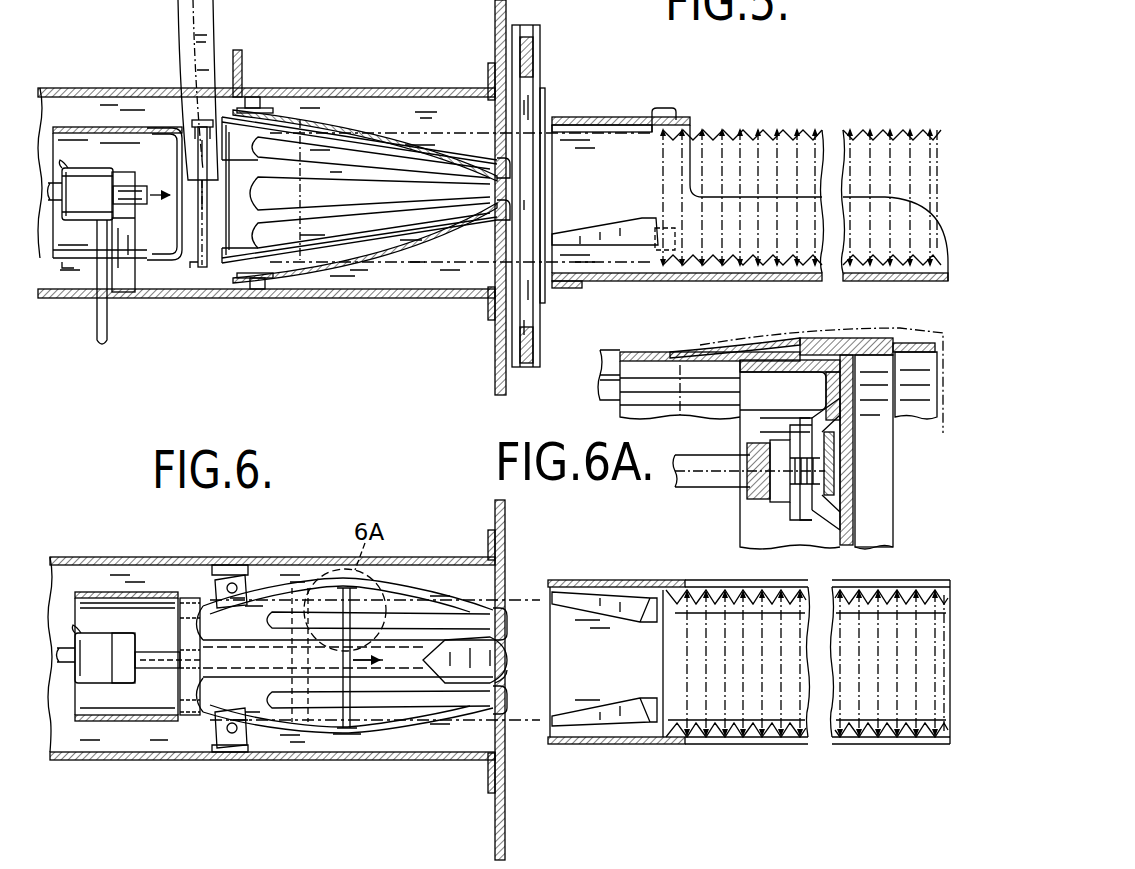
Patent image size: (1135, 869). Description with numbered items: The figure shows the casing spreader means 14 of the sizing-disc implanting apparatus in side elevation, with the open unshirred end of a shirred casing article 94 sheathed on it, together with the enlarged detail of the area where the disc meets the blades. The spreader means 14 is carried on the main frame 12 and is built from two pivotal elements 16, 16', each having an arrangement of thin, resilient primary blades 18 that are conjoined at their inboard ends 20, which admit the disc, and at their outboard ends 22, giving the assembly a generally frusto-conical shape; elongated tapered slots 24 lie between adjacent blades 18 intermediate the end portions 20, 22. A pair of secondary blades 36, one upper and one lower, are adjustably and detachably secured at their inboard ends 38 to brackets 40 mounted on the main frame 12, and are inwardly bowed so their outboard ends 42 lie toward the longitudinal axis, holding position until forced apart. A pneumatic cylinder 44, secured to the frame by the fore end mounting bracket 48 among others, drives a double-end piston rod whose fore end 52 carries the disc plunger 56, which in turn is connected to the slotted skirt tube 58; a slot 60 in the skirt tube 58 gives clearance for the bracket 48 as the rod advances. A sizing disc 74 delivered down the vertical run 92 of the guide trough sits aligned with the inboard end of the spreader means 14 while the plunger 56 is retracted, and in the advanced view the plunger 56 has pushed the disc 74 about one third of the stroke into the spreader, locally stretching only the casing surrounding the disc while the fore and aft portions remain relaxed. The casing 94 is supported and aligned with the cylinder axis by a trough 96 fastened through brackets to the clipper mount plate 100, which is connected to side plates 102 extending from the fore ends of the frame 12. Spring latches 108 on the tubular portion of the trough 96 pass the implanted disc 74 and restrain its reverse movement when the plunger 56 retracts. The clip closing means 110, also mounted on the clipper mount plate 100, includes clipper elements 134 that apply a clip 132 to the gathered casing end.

In FIG. 5, the main frame 12 is at (330, 298).
In FIG. 6, the main frame 12 is at (140, 760).
In FIG. 5, the casing spreader means 14 is at (373, 125).
In FIG. 6, the casing spreader means 14 is at (393, 737).
In FIG. 6, the pivotal element 16 is at (254, 760).
In FIG. 6, the pivotal element 16' is at (256, 560).
In FIG. 5, the primary blades 18 is at (345, 173).
In FIG. 6A, the primary blades 18 is at (917, 337).
In FIG. 6, the primary blades 18 is at (400, 588).
In FIG. 5, the inboard ends 20 is at (197, 203).
In FIG. 6, the inboard ends 20 is at (192, 615).
In FIG. 5, the outboard ends 22 is at (510, 172).
In FIG. 6, the outboard ends 22 is at (507, 622).
In FIG. 5, the tapered slots 24 is at (262, 190).
In FIG. 6, the tapered slots 24 is at (455, 612).
In FIG. 5, the secondary blades 36 is at (328, 115).
In FIG. 6, the secondary blades 36 is at (497, 660).
In FIG. 5, the inboard ends of secondary blades 38 is at (215, 229).
In FIG. 6, the inboard ends of secondary blades 38 is at (203, 688).
In FIG. 5, the brackets 40 is at (258, 107).
In FIG. 5, the outboard ends of secondary blades 42 is at (507, 205).
In FIG. 6, the outboard ends of secondary blades 42 is at (508, 672).
In FIG. 5, the pneumatic cylinder 44 is at (90, 180).
In FIG. 6, the pneumatic cylinder 44 is at (97, 683).
In FIG. 5, the fore end mounting bracket 48 is at (122, 292).
In FIG. 5, the fore end of piston rod 52 is at (140, 190).
In FIG. 6A, the fore end of piston rod 52 is at (702, 487).
In FIG. 6, the fore end of piston rod 52 is at (153, 652).
In FIG. 5, the disc plunger 56 is at (162, 135).
In FIG. 6A, the disc plunger 56 is at (813, 372).
In FIG. 5, the slotted skirt tube 58 is at (80, 125).
In FIG. 6A, the slotted skirt tube 58 is at (637, 352).
In FIG. 6, the slotted skirt tube 58 is at (98, 592).
In FIG. 5, the slot 60 is at (70, 262).
In FIG. 5, the sizing disc 74 is at (190, 270).
In FIG. 6A, the sizing disc 74 is at (856, 413).
In FIG. 6, the sizing disc 74 is at (368, 742).
In FIG. 5, the vertical run 92 is at (190, 20).
In FIG. 5, the shirred casing article 94 is at (745, 128).
In FIG. 6, the shirred casing article 94 is at (772, 730).
In FIG. 5, the trough 96 is at (735, 282).
In FIG. 5, the clipper mount plate 100 is at (497, 26).
In FIG. 6, the clipper mount plate 100 is at (505, 838).
In FIG. 5, the side plates 102 is at (490, 78).
In FIG. 6, the side plates 102 is at (490, 545).
In FIG. 5, the spring latches 108 is at (630, 130).
In FIG. 6, the spring latches 108 is at (620, 612).
In FIG. 5, the clip closing means 110 is at (549, 110).
In FIG. 5, the clip 132 is at (527, 65).
In FIG. 5, the clipper element 134 is at (528, 341).